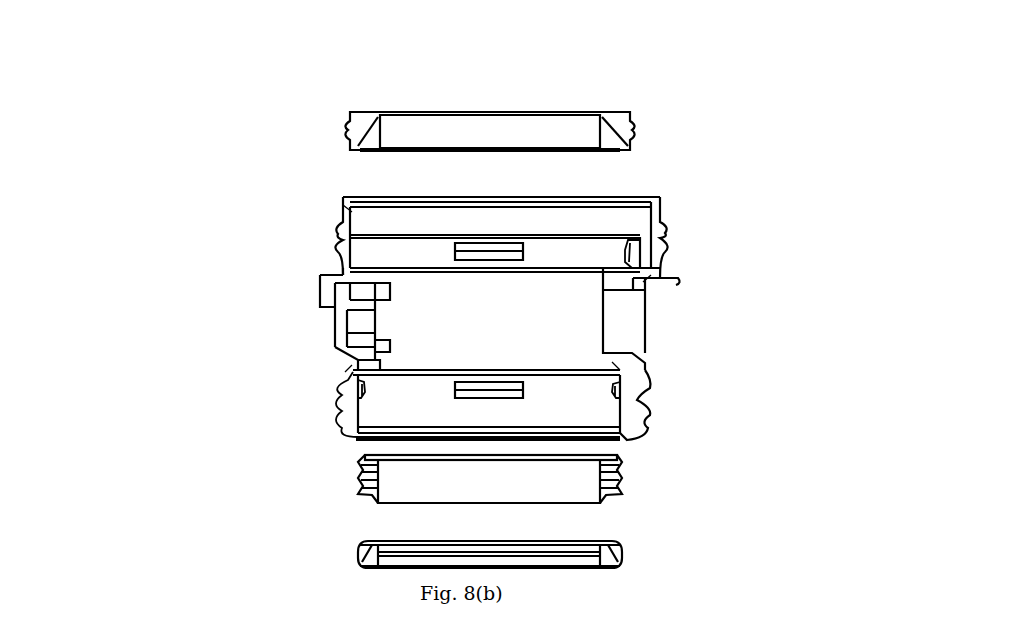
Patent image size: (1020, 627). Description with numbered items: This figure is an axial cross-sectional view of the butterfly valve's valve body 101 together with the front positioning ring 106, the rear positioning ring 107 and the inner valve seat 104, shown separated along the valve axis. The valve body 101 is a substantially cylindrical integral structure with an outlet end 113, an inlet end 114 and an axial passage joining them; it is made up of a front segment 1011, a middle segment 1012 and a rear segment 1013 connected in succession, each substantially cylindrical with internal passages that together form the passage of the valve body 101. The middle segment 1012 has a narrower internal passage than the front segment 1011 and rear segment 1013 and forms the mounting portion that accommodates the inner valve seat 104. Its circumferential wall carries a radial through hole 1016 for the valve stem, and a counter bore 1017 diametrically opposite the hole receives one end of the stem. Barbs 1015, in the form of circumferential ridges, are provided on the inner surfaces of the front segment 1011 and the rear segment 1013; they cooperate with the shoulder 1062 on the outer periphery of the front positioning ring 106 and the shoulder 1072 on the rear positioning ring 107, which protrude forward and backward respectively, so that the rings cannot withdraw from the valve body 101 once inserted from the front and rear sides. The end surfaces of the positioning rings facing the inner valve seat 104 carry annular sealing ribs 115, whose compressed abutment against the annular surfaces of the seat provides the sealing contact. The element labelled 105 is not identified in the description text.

The valve body 101 is at (290, 330).
The inner valve seat 104 is at (347, 372).
The bottom plate 105 is at (342, 562).
The front positioning ring 106 is at (342, 490).
The rear positioning ring 107 is at (331, 128).
The outlet end 113 is at (637, 442).
The inlet end 114 is at (658, 198).
The annular sealing rib 115 is at (350, 285).
The front segment 1011 is at (680, 227).
The middle segment 1012 is at (662, 313).
The rear segment 1013 is at (662, 417).
The barb 1015 is at (635, 253).
The radial through hole 1016 is at (633, 327).
The counter bore 1017 is at (365, 318).
The shoulder 1062 is at (623, 467).
The shoulder 1072 is at (632, 142).